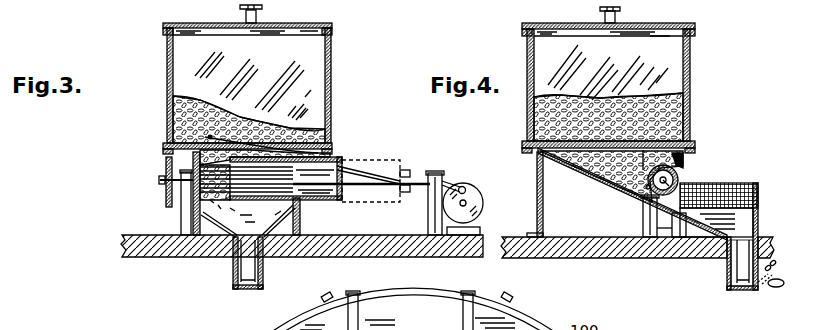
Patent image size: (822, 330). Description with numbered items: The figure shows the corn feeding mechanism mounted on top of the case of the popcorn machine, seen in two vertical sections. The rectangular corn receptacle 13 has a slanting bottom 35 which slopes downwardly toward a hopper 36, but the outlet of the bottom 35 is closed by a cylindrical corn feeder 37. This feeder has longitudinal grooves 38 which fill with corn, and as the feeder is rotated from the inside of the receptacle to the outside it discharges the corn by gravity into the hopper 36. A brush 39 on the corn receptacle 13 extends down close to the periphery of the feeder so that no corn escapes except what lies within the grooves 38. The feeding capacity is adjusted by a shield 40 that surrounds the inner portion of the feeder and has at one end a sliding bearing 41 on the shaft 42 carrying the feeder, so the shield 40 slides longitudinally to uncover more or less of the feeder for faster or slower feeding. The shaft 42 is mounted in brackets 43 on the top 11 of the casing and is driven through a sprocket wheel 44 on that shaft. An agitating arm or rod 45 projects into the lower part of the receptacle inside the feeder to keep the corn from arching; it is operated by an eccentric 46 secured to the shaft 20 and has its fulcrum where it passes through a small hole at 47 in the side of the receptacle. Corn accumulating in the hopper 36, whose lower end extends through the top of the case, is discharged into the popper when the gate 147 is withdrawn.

In FIG. 3, the top of the casing 11 is at (170, 255).
In FIG. 4, the top of the casing 11 is at (620, 252).
In FIG. 3, the corn receptacle 13 is at (330, 78).
In FIG. 4, the corn receptacle 13 is at (686, 71).
In FIG. 3, the shaft 20 is at (479, 204).
In FIG. 4, the slanting bottom 35 is at (578, 163).
In FIG. 3, the hopper 36 is at (300, 228).
In FIG. 4, the hopper 36 is at (740, 229).
In FIG. 3, the cylindrical corn feeder 37 is at (306, 199).
In FIG. 4, the cylindrical corn feeder 37 is at (680, 167).
In FIG. 3, the longitudinal grooves 38 is at (256, 186).
In FIG. 4, the longitudinal grooves 38 is at (690, 181).
In FIG. 4, the brush 39 is at (690, 148).
In FIG. 3, the shield 40 is at (327, 157).
In FIG. 4, the shield 40 is at (647, 188).
In FIG. 3, the sliding bearing 41 is at (344, 190).
In FIG. 3, the shaft 42 is at (419, 172).
In FIG. 4, the shaft 42 is at (656, 200).
In FIG. 3, the brackets 43 is at (430, 224).
In FIG. 4, the brackets 43 is at (643, 228).
In FIG. 3, the sprocket wheel 44 is at (165, 173).
In FIG. 3, the agitating arm or rod 45 is at (262, 150).
In FIG. 4, the agitating arm or rod 45 is at (655, 136).
In FIG. 3, the eccentric 46 is at (466, 189).
In FIG. 4, the small hole 47 is at (610, 184).
In FIG. 3, the gate 147 is at (253, 290).
In FIG. 4, the gate 147 is at (742, 290).